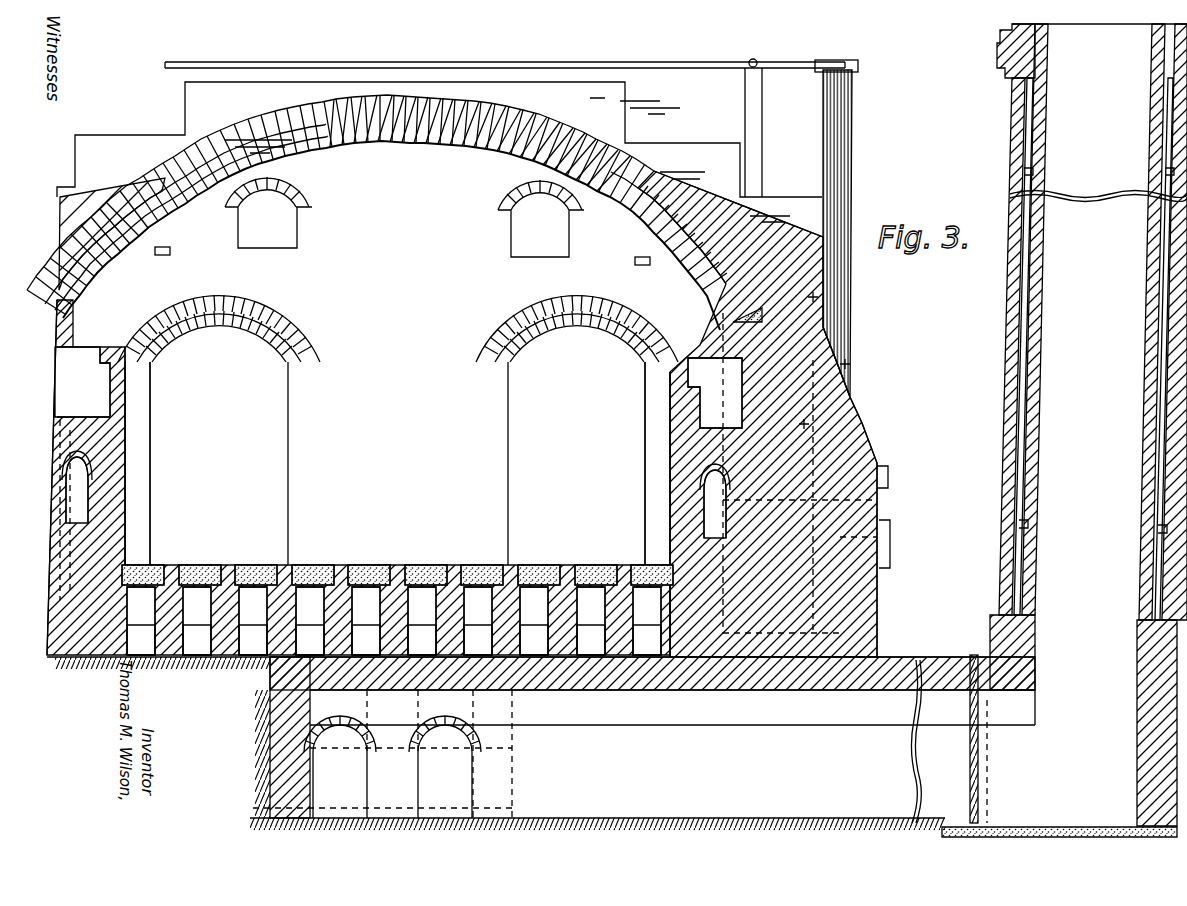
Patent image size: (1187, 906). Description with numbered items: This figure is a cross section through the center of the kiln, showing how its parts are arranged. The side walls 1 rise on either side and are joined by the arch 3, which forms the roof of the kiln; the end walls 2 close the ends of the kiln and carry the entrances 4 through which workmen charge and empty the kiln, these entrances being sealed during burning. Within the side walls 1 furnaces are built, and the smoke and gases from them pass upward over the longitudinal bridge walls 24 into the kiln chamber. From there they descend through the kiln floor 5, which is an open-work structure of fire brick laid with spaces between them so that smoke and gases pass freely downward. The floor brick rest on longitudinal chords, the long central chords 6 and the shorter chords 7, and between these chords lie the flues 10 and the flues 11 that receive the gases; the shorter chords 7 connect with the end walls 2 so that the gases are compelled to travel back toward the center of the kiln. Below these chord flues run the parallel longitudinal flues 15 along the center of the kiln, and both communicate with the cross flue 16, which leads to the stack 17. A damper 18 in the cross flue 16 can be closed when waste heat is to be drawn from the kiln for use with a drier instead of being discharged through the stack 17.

The side walls 1 is at (850, 452).
The end walls 2 is at (395, 356).
The arch 3 is at (441, 146).
The entrances 4 is at (398, 430).
The kiln floor 5 is at (300, 566).
The long longitudinal chords 6 is at (474, 641).
The shorter longitudinal chords 7 is at (643, 641).
The flues 10 is at (394, 621).
The flues 11 is at (394, 621).
The parallel longitudinal flues 15 is at (327, 762).
The cross flue 16 is at (713, 763).
The stack 17 is at (1088, 425).
The damper 18 is at (978, 770).
The longitudinal bridge walls 24 is at (118, 432).